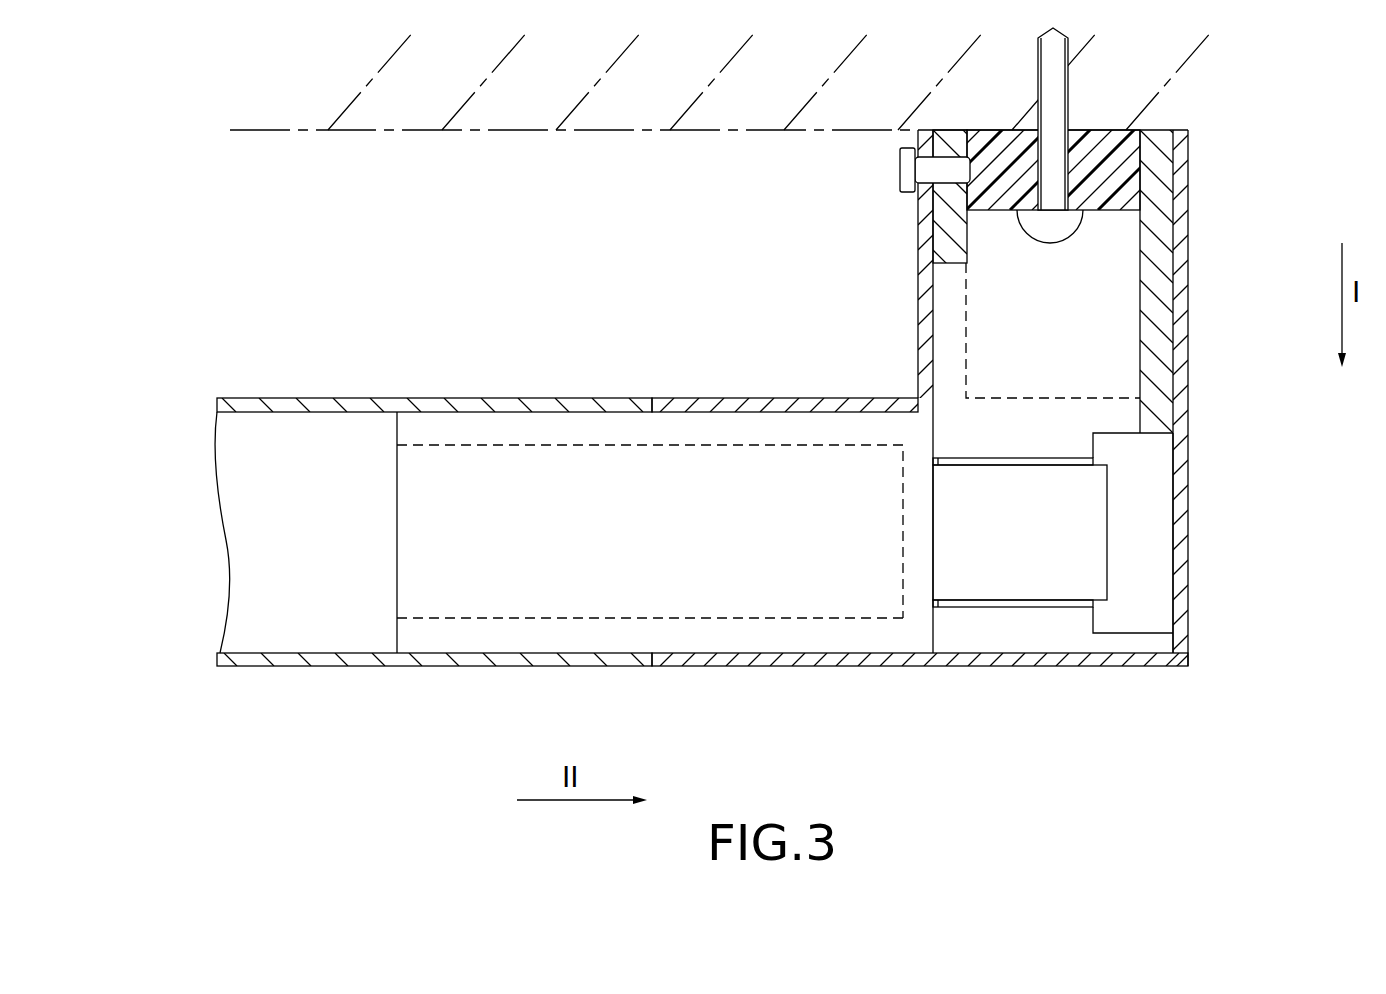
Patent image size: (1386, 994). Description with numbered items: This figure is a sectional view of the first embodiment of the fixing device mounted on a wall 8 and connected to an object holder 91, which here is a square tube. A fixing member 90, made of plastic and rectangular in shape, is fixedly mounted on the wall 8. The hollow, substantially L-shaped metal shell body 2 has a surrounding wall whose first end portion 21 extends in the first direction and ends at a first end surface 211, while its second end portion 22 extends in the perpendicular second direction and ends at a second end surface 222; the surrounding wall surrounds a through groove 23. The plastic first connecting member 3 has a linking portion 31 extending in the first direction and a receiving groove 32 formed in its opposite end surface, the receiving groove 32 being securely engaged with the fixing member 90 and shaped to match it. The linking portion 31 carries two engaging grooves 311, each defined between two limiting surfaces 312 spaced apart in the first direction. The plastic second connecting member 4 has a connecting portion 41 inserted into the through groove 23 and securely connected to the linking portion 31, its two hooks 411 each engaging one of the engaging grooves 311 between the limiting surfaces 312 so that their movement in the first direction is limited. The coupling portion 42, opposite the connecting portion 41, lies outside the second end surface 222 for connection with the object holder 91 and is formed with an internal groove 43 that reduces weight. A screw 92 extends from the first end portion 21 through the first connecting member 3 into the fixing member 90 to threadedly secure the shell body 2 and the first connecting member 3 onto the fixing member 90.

The shell body 2 is at (994, 441).
The first end portion 21 is at (1188, 332).
The first end surface 211 is at (1179, 128).
The second end portion 22 is at (905, 655).
The second end surface 222 is at (655, 400).
The through groove 23 is at (1173, 585).
The first connecting member 3 is at (1124, 366).
The linking portion 31 is at (1221, 532).
The engaging grooves 311 is at (1143, 448).
The limiting surfaces 312 is at (1033, 460).
The receiving groove 32 is at (933, 271).
The second connecting member 4 is at (650, 529).
The connecting portion 41 is at (1020, 608).
The hooks 411 is at (1023, 570).
The coupling portion 42 is at (500, 635).
The internal groove 43 is at (618, 590).
The wall 8 is at (528, 140).
The fixing member 90 is at (1110, 128).
The object holder 91 is at (433, 582).
The screw 92 is at (890, 170).